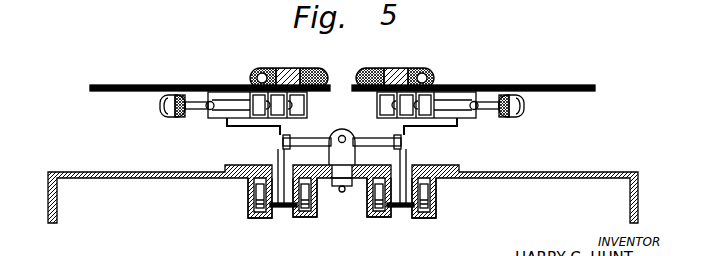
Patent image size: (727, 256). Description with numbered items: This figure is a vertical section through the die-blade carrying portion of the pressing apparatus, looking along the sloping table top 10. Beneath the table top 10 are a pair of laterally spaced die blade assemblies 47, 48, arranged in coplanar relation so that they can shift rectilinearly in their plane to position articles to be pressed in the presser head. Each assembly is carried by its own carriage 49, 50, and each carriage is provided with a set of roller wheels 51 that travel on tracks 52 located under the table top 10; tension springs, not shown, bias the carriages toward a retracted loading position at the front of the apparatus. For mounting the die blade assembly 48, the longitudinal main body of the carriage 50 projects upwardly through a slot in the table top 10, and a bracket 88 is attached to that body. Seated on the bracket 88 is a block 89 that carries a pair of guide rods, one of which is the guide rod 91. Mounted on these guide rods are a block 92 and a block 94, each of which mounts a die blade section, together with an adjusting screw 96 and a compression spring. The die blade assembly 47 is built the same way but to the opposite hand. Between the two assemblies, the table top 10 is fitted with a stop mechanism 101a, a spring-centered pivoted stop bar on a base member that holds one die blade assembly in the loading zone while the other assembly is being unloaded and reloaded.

The table top 10 is at (98, 170).
The die blade assembly 47 is at (205, 83).
The die blade assembly 48 is at (527, 87).
The carriage 49 is at (285, 207).
The carriage 50 is at (400, 208).
The roller wheels 51 is at (256, 193).
The tracks 52 is at (250, 206).
The bracket 88 is at (446, 126).
The block 89 is at (413, 100).
The guide rod 91 is at (463, 104).
The block 92 is at (455, 104).
The block 94 is at (383, 86).
The adjusting screw 96 is at (524, 108).
The stop mechanism 101a is at (355, 124).